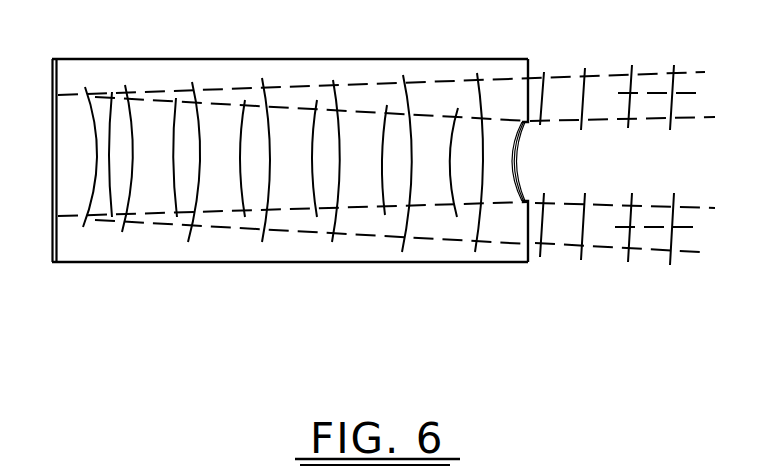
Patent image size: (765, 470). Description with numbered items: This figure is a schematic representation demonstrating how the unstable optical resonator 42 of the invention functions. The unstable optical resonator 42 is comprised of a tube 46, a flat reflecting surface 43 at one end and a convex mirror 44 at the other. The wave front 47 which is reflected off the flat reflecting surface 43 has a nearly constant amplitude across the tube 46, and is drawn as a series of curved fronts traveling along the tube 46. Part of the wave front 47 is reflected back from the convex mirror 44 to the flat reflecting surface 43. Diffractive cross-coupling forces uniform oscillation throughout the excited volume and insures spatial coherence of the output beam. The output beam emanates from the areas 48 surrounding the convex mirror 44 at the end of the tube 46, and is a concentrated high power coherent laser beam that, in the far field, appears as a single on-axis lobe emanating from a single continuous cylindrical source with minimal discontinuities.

The unstable optical resonator 42 is at (383, 174).
The flat reflecting surface 43 is at (58, 246).
The convex mirror 44 is at (513, 167).
The tube 46 is at (366, 262).
The wave front 47 is at (270, 175).
The areas 48 is at (530, 105).